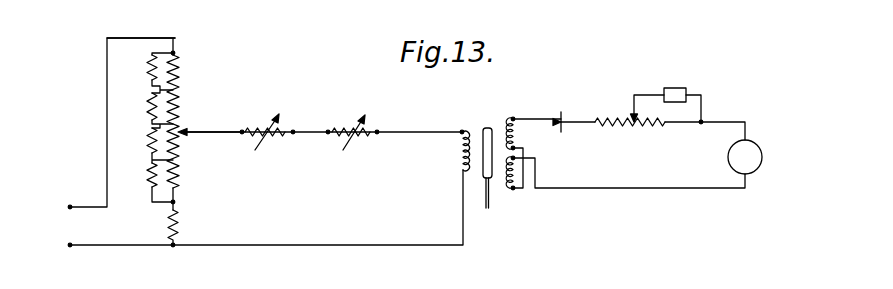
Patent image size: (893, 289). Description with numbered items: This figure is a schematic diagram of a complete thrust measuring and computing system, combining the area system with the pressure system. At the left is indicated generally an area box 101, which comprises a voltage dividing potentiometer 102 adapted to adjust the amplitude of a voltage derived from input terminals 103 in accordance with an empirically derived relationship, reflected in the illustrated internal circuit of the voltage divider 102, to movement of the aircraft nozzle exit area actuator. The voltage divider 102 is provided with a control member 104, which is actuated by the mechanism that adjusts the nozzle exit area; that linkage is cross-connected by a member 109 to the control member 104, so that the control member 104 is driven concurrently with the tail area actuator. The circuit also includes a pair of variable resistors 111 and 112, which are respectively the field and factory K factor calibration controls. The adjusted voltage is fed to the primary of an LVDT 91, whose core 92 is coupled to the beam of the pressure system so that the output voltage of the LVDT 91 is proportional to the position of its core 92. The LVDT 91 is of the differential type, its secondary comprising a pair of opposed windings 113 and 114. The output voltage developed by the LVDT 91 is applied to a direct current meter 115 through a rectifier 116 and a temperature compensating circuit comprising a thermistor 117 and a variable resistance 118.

The area box 101 is at (168, 13).
The voltage dividing potentiometer 102 is at (179, 92).
The input terminals 103 is at (69, 207).
The control member 104 is at (212, 134).
The variable resistor 111 is at (270, 147).
The variable resistor 112 is at (356, 147).
The LVDT 91 is at (486, 122).
The core 92 is at (493, 127).
The secondary winding 113 is at (514, 137).
The secondary winding 114 is at (505, 182).
The rectifier 116 is at (561, 111).
The variable resistance 118 is at (603, 119).
The thermistor 117 is at (677, 88).
The direct current meter 115 is at (757, 146).
The cross-connecting member 109 is at (612, 7).